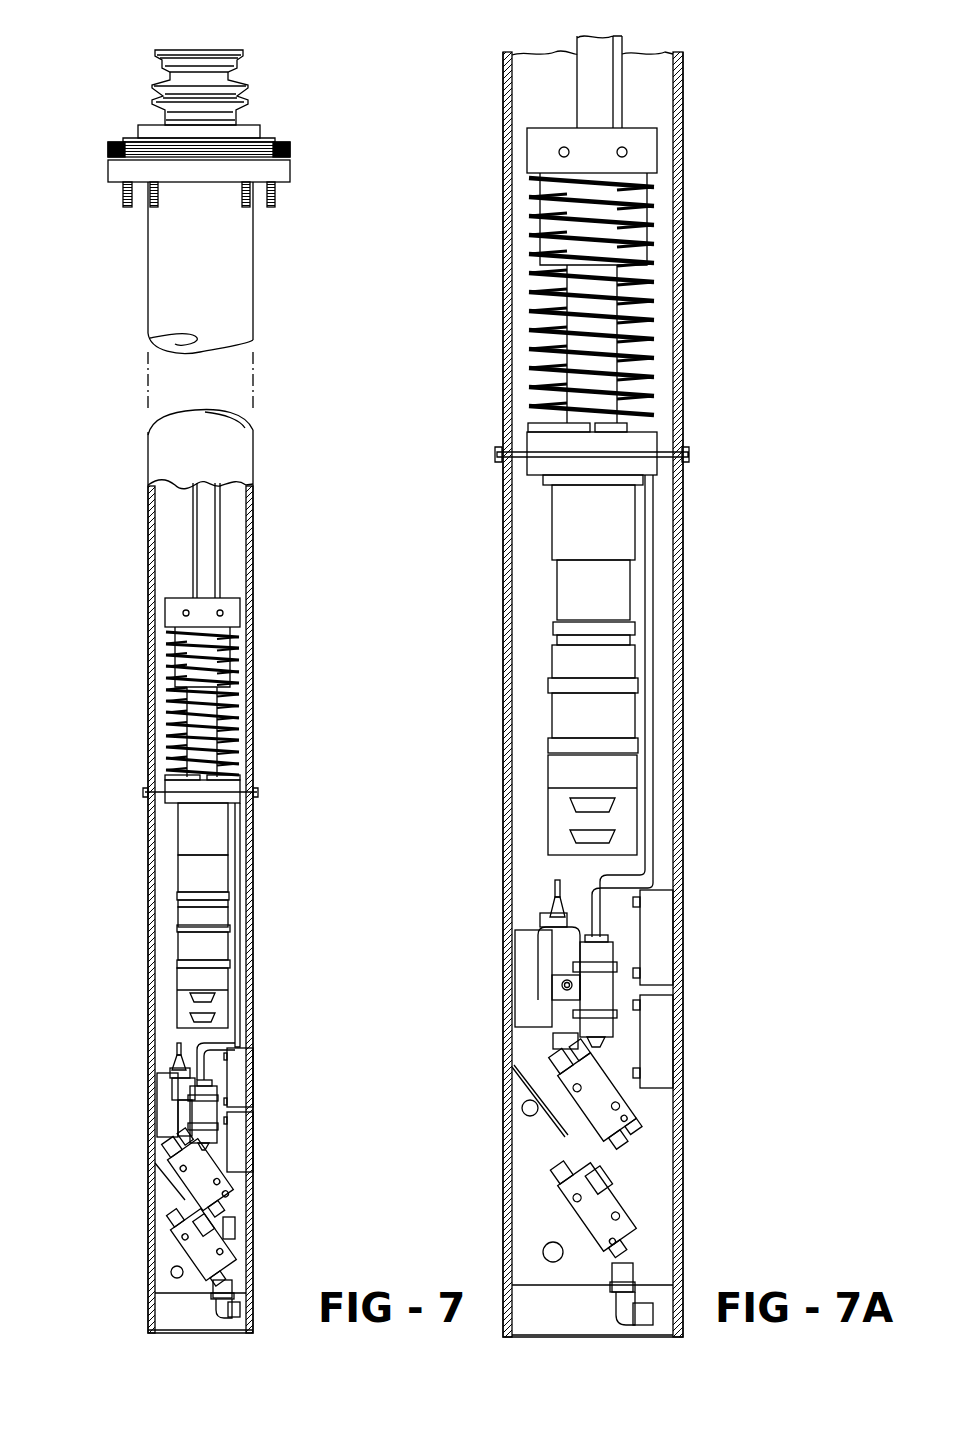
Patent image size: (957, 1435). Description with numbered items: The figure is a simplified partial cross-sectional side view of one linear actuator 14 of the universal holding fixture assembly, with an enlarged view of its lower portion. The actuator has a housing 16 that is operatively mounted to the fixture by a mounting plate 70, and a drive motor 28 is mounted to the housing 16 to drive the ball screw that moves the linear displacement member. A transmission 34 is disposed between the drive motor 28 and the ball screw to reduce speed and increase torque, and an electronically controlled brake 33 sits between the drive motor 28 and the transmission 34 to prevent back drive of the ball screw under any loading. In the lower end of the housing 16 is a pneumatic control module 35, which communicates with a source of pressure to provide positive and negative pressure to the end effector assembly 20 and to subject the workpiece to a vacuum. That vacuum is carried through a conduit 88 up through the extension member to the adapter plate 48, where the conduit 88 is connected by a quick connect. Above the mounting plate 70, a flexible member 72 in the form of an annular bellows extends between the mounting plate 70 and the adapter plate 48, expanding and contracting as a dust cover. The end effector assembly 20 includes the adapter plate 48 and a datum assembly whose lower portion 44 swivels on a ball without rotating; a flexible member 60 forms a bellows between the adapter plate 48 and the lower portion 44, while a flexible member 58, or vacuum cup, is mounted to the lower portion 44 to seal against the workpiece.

In FIG. 7, the linear actuator 14 is at (290, 380).
In FIG. 7A, the linear actuator 14 is at (756, 161).
In FIG. 7, the housing 16 is at (156, 288).
In FIG. 7A, the housing 16 is at (683, 475).
In FIG. 7, the end effector assembly 20 is at (274, 58).
In FIG. 7, the drive motor 28 is at (176, 998).
In FIG. 7A, the drive motor 28 is at (623, 810).
In FIG. 7, the electronically controlled brake 33 is at (215, 915).
In FIG. 7A, the electronically controlled brake 33 is at (625, 666).
In FIG. 7, the transmission 34 is at (223, 837).
In FIG. 7A, the transmission 34 is at (622, 541).
In FIG. 7, the pneumatic control module 35 is at (130, 1164).
In FIG. 7A, the pneumatic control module 35 is at (690, 972).
In FIG. 7, the lower portion 44 is at (165, 78).
In FIG. 7, the adapter plate 48 is at (256, 133).
In FIG. 7, the flexible member 58 is at (158, 61).
In FIG. 7, the flexible member 60 is at (240, 96).
In FIG. 7, the mounting plate 70 is at (282, 172).
In FIG. 7, the flexible member 72 is at (108, 150).
In FIG. 7, the conduit 88 is at (166, 700).
In FIG. 7A, the conduit 88 is at (656, 263).